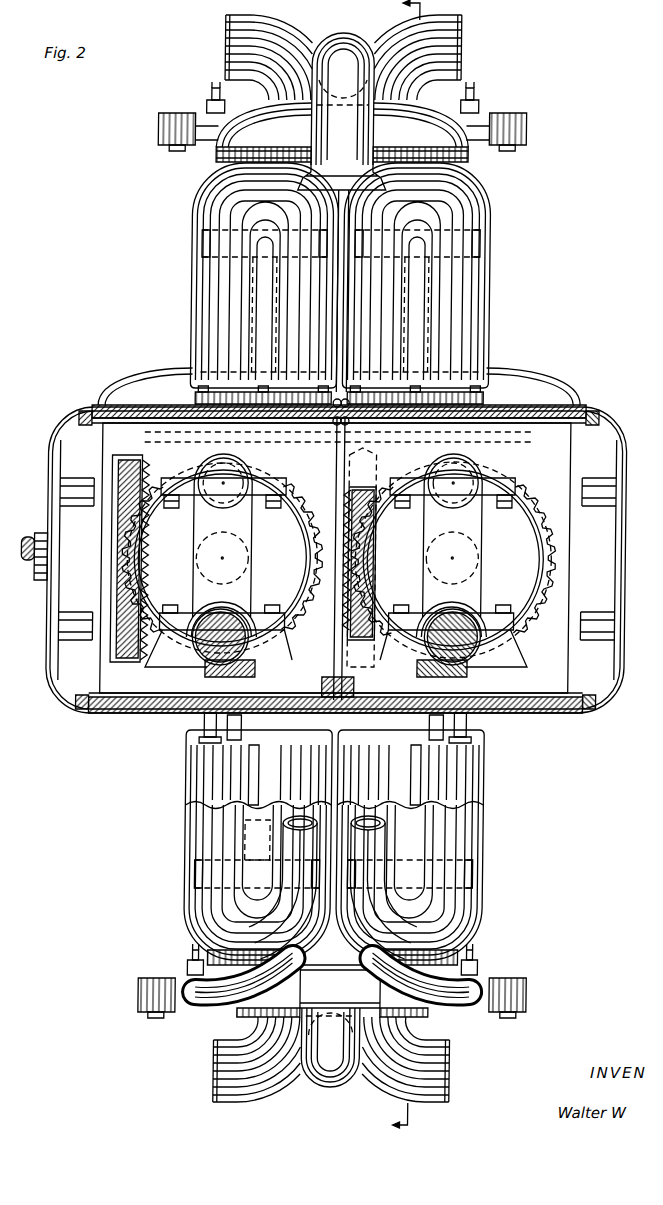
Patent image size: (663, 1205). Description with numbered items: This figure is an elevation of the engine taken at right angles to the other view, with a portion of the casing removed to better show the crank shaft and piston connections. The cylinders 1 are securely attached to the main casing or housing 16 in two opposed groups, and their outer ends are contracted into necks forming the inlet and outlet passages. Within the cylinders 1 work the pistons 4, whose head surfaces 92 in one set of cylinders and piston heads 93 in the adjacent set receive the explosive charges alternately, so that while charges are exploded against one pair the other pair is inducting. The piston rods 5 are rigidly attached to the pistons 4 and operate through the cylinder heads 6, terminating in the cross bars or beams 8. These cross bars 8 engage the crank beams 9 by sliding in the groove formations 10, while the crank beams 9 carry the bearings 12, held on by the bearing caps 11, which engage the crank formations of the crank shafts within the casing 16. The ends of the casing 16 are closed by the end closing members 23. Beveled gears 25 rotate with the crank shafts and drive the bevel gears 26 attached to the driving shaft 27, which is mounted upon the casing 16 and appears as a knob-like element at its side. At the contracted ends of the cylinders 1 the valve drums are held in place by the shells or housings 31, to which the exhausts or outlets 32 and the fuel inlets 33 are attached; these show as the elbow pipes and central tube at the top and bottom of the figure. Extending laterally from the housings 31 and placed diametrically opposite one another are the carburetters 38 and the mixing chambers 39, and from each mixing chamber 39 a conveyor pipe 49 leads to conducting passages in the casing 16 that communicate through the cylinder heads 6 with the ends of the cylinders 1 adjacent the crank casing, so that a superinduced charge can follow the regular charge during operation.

The cylinders 1 is at (398, 567).
The pistons 4 is at (492, 247).
The piston rods 5 is at (430, 772).
The cylinder heads 6 is at (446, 726).
The cross bars or beams 8 is at (470, 450).
The crank beams 9 is at (312, 650).
The groove formations 10 is at (218, 702).
The bearing caps 11 is at (190, 490).
The bearings 12 is at (205, 640).
The main casing or housing 16 is at (150, 405).
The end closing members 23 is at (55, 590).
The beveled gears 25 is at (312, 488).
The bevel gears 26 is at (128, 640).
The driving shaft 27 is at (40, 535).
The shells or housings 31 is at (421, 128).
The exhausts or outlets 32 is at (226, 46).
The fuel inlets 33 is at (350, 38).
The carburetters 38 is at (160, 130).
The mixing chambers 39 is at (208, 106).
The conveyor pipes 49 is at (210, 1006).
The head surfaces 92 is at (447, 230).
The piston heads 93 is at (240, 230).